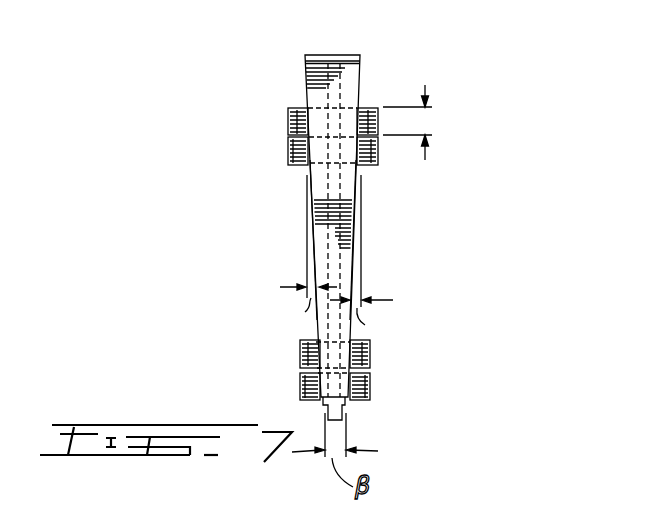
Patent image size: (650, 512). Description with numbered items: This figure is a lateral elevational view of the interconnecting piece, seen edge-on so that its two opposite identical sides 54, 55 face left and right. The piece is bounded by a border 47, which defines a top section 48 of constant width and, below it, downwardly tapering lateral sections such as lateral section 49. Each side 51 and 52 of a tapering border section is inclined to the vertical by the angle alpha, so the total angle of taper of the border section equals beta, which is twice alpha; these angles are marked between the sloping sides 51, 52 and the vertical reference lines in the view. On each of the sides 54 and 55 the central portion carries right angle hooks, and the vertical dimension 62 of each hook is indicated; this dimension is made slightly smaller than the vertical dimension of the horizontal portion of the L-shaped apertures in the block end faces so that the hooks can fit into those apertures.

The border 47 is at (315, 193).
The top section 48 is at (315, 55).
The lateral section 49 is at (353, 190).
The side 51 is at (318, 270).
The side 52 is at (350, 280).
The side 54 is at (299, 240).
The side 55 is at (370, 237).
The vertical dimension 62 is at (425, 124).